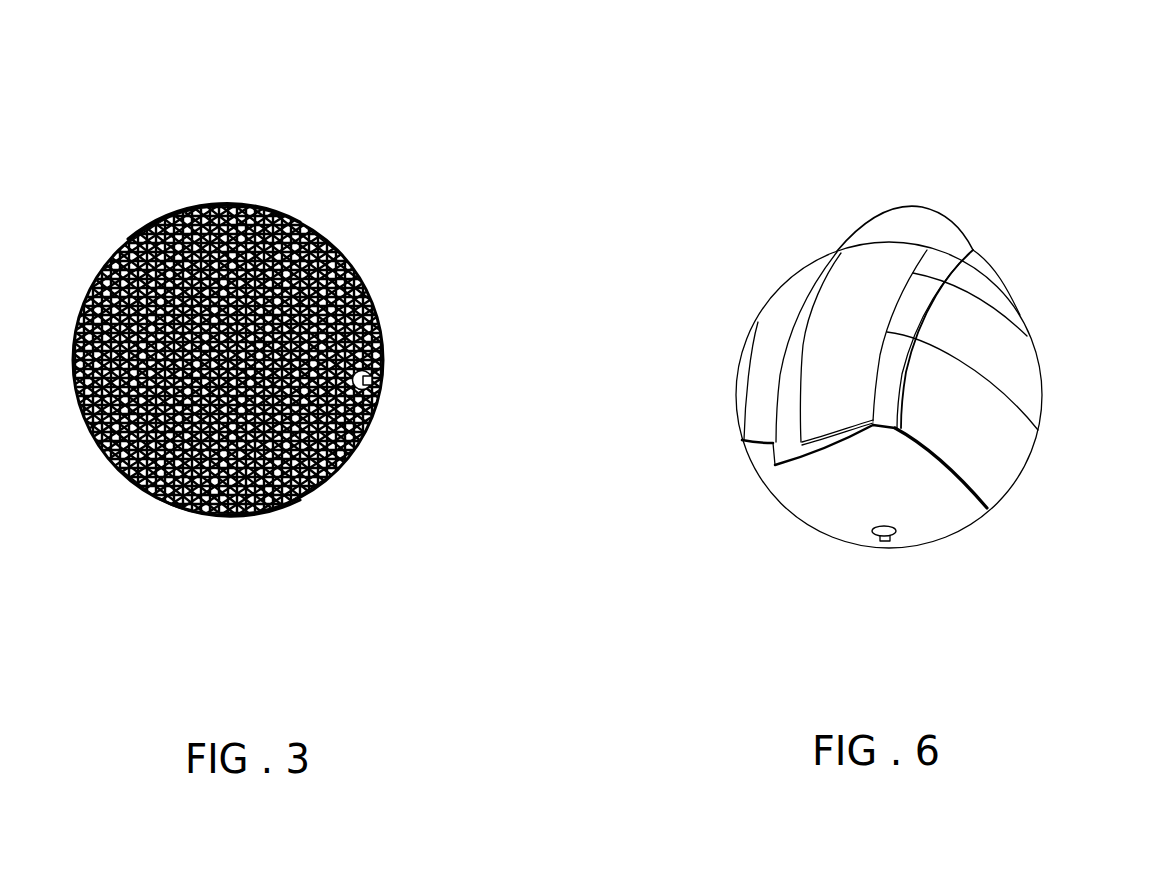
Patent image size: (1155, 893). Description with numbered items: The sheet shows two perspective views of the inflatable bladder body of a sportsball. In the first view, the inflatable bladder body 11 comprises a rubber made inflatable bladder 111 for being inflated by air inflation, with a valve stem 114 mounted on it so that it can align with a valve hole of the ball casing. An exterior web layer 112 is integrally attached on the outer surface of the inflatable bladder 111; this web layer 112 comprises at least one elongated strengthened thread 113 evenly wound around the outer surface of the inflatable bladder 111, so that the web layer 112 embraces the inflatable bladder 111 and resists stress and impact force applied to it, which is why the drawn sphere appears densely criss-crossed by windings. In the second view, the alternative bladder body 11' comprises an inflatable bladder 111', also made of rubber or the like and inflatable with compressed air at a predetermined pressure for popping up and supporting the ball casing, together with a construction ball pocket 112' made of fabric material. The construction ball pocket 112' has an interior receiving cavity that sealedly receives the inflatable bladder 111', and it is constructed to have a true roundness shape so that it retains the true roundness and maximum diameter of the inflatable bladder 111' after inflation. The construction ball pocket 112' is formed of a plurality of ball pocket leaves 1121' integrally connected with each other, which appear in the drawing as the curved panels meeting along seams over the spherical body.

In FIG. 3, the inflatable bladder body 11 is at (263, 257).
In FIG. 3, the inflatable bladder 111 is at (228, 328).
In FIG. 3, the exterior web layer 112 is at (201, 170).
In FIG. 3, the elongated strengthened thread 113 is at (243, 515).
In FIG. 3, the valve stem 114 is at (377, 380).
In FIG. 6, the bladder body 11' is at (937, 381).
In FIG. 6, the inflatable bladder 111' is at (870, 523).
In FIG. 6, the construction ball pocket 112' is at (902, 288).
In FIG. 6, the ball pocket leaves 1121' is at (905, 246).